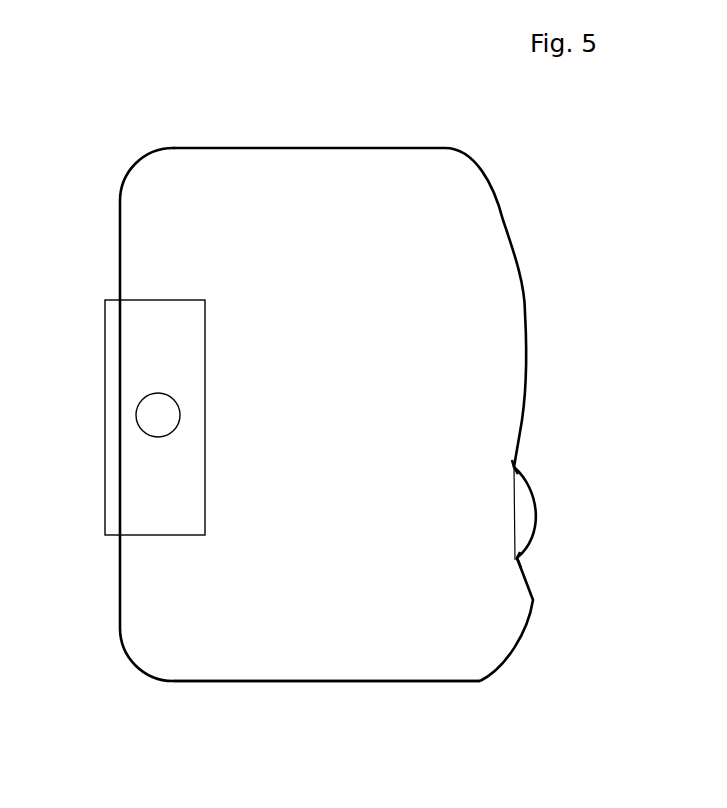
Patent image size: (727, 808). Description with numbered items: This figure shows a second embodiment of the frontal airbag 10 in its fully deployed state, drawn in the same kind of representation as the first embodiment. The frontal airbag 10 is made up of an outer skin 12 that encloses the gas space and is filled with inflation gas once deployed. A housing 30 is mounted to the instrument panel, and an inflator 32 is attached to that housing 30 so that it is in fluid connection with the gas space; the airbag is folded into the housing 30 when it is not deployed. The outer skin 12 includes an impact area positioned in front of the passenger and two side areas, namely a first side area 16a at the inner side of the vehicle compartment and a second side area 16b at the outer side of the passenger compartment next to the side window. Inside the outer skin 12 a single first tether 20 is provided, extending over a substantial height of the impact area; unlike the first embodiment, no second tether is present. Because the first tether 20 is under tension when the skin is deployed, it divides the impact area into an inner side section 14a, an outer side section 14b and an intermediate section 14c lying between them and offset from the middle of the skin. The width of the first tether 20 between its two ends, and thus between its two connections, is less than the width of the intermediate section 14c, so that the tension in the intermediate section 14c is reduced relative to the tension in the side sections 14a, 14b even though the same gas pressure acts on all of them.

The frontal airbag 10 is at (526, 311).
The outer skin 12 is at (503, 218).
The inner side section 14a is at (500, 663).
The outer side section 14b is at (527, 377).
The intermediate section 14c is at (530, 547).
The first side area 16a is at (307, 683).
The second side area 16b is at (317, 148).
The first tether 20 is at (524, 503).
The housing 30 is at (108, 528).
The inflator 32 is at (155, 392).